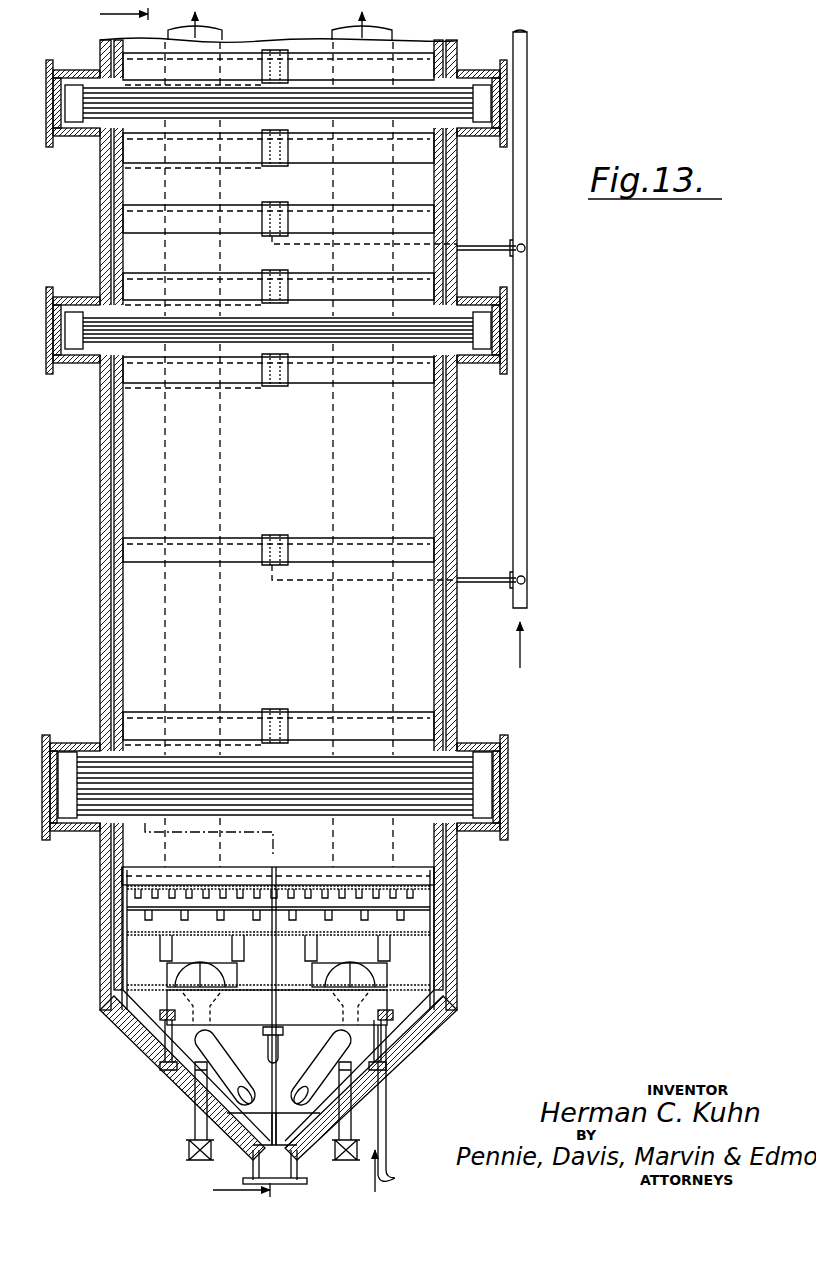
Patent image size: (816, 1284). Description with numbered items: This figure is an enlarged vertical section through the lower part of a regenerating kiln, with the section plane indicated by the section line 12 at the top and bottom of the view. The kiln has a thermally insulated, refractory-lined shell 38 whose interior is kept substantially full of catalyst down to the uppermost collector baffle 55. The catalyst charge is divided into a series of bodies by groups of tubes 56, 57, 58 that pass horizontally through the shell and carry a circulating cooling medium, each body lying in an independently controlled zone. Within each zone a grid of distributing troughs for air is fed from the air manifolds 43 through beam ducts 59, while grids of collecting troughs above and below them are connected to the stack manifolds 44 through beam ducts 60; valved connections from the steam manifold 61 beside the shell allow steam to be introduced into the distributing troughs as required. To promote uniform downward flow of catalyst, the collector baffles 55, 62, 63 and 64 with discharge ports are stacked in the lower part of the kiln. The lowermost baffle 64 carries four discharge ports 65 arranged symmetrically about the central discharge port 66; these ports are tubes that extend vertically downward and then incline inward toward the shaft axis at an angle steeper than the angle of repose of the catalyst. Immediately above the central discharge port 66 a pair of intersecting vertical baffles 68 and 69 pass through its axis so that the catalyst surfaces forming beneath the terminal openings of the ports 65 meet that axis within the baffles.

The section line 12 is at (164, 605).
The vessel shell 38 is at (100, 537).
The air manifold 43 is at (382, 38).
The stack manifold 44 is at (212, 38).
The collector baffle 55 is at (440, 872).
The group of tubes 56 is at (138, 796).
The group of tubes 57 is at (135, 336).
The group of tubes 58 is at (135, 108).
The beam duct 59 is at (280, 204).
The beam duct 60 is at (277, 52).
The steam manifold 61 is at (530, 425).
The collector baffle 62 is at (440, 910).
The collector baffle 63 is at (440, 945).
The lowermost collector baffle 64 is at (425, 990).
The discharge port 65 is at (222, 1068).
The central discharge port 66 is at (292, 1162).
The vertical baffle 68 is at (288, 1118).
The vertical baffle 69 is at (266, 1128).